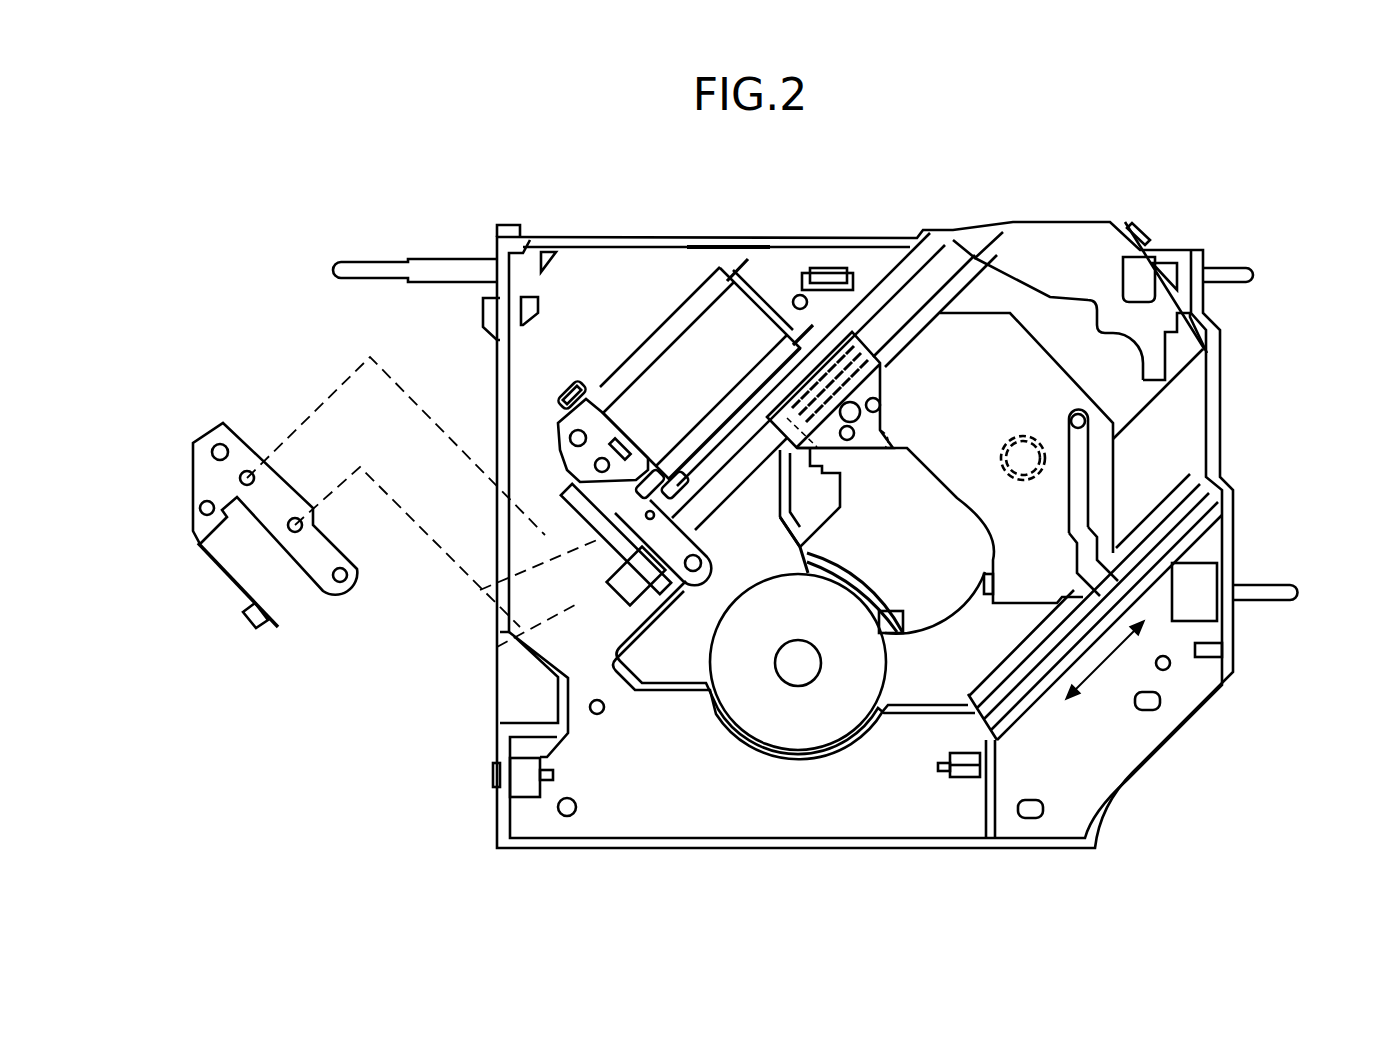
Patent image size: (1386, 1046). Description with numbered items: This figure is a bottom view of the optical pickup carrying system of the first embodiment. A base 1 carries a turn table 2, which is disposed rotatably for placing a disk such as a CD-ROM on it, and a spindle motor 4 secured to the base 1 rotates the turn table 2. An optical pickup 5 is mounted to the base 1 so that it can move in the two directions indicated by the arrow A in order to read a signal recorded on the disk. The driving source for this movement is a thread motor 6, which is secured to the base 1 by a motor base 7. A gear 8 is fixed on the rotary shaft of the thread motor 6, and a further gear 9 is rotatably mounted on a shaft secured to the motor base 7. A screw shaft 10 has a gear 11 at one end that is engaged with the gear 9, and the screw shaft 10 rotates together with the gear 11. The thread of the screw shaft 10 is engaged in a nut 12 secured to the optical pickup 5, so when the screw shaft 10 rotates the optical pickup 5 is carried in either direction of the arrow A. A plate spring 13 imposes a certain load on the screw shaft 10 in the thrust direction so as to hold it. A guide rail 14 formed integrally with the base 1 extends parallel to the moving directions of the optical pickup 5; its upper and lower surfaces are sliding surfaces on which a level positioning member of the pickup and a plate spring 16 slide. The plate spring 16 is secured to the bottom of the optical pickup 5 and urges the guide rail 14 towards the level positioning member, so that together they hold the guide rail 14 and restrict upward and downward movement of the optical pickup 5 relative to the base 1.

The base 1 is at (803, 808).
The turn table 2 is at (883, 607).
The spindle motor 4 is at (762, 720).
The optical pickup 5 is at (1050, 398).
The thread motor 6 is at (722, 345).
The motor base 7 is at (583, 420).
The gear 8 is at (596, 470).
The gear 9 is at (600, 530).
The screw shaft 10 is at (937, 282).
The gear 11 is at (628, 585).
The nut 12 is at (828, 483).
The plate spring 13 is at (202, 483).
The guide rail 14 is at (1197, 502).
The plate spring 16 is at (1080, 486).